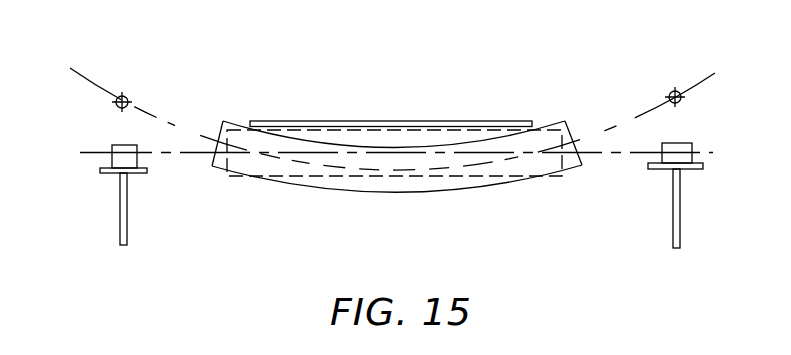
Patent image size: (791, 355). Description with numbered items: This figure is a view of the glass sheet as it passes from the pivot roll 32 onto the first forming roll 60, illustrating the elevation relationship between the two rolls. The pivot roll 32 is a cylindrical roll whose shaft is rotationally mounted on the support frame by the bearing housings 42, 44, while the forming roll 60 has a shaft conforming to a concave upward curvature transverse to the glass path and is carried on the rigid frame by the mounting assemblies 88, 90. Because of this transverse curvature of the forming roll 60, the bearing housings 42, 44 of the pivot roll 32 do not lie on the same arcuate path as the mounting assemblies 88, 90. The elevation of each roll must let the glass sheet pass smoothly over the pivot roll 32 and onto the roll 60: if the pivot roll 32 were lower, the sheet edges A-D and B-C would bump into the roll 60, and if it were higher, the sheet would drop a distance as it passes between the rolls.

The pivot roll 32 is at (567, 172).
The forming roll 60 is at (568, 122).
The mounting assembly 88 is at (127, 96).
The mounting assembly 90 is at (671, 92).
The bearing housing 42 is at (112, 145).
The bearing housing 44 is at (692, 143).
The edge AD of glass sheet A-D is at (253, 122).
The edge BC of glass sheet B-C is at (533, 123).